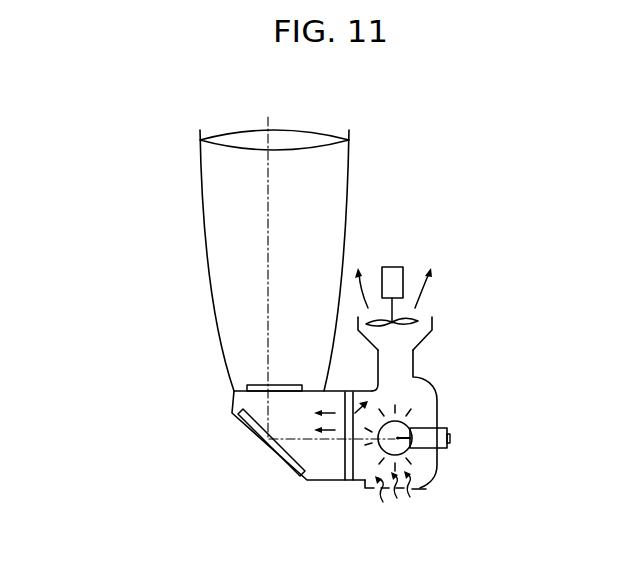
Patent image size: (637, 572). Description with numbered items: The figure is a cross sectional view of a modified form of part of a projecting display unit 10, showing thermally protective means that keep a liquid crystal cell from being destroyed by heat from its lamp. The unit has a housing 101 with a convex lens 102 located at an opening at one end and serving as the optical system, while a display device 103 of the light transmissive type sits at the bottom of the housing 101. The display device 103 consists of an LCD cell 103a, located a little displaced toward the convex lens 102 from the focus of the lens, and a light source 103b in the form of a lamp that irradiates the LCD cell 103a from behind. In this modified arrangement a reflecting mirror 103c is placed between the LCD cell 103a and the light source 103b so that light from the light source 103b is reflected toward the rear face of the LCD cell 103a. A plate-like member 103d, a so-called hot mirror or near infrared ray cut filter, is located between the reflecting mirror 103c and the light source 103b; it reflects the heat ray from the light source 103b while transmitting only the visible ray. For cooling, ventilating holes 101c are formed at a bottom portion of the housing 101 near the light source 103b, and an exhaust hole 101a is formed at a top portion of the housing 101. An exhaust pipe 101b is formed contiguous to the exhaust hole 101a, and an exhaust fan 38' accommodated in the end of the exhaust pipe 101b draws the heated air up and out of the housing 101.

The projecting display unit 10 is at (205, 288).
The housing 101 is at (205, 218).
The exhaust hole 101a is at (405, 377).
The exhaust pipe 101b is at (415, 355).
The ventilating holes 101c is at (410, 498).
The convex lens 102 is at (248, 140).
The display device 103 is at (333, 400).
The LCD cell 103a is at (247, 384).
The light source 103b is at (407, 424).
The reflecting mirror 103c is at (272, 449).
The member 103d is at (347, 468).
The exhaust fan 38' is at (423, 296).